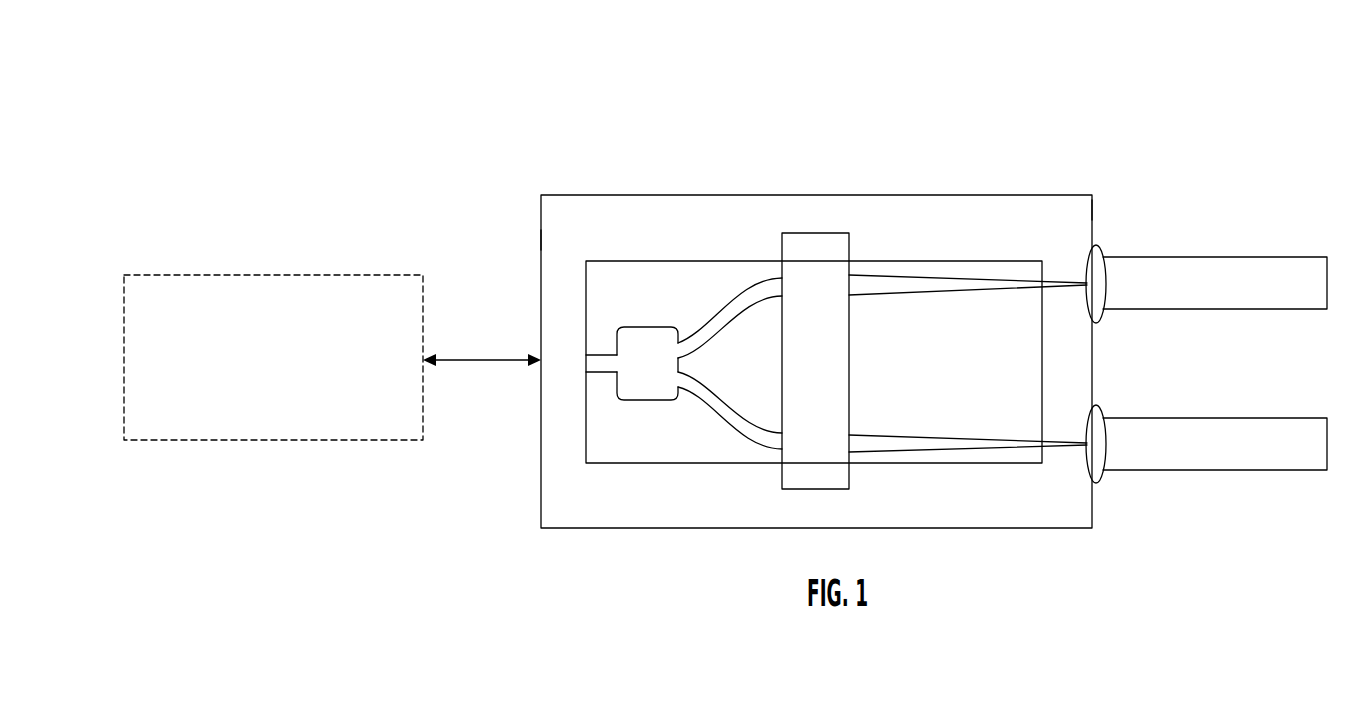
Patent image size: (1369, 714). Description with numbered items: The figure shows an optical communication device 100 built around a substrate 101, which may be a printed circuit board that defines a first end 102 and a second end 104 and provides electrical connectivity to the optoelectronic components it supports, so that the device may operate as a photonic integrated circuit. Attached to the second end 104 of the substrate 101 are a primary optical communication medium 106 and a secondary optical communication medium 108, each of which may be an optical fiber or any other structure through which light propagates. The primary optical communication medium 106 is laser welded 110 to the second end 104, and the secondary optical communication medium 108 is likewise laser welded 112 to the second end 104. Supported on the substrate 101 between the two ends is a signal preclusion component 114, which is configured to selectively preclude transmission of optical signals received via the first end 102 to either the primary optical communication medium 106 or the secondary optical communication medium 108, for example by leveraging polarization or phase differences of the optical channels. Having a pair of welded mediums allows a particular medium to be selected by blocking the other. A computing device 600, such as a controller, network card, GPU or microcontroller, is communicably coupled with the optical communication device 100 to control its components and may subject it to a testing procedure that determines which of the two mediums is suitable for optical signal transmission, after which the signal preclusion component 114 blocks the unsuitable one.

The optical communication device 100 is at (236, 103).
The substrate 101 is at (576, 190).
The first end 102 is at (532, 237).
The second end 104 is at (1101, 206).
The primary optical communication medium 106 is at (1279, 253).
The secondary optical communication medium 108 is at (1263, 414).
The weld 110 is at (1110, 326).
The weld 112 is at (1110, 490).
The signal preclusion component 114 is at (830, 228).
The computing device 600 is at (216, 272).